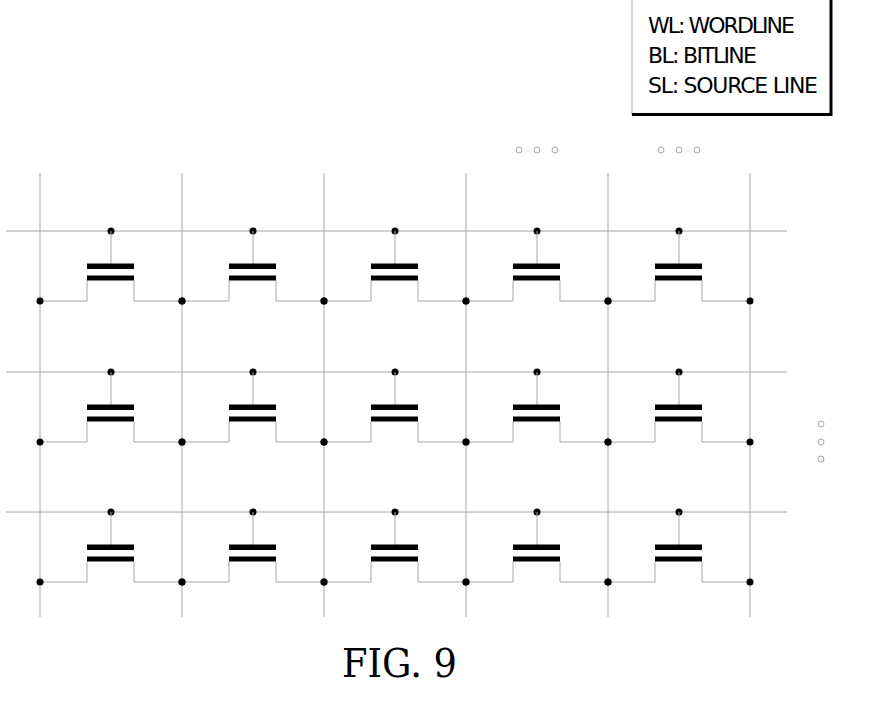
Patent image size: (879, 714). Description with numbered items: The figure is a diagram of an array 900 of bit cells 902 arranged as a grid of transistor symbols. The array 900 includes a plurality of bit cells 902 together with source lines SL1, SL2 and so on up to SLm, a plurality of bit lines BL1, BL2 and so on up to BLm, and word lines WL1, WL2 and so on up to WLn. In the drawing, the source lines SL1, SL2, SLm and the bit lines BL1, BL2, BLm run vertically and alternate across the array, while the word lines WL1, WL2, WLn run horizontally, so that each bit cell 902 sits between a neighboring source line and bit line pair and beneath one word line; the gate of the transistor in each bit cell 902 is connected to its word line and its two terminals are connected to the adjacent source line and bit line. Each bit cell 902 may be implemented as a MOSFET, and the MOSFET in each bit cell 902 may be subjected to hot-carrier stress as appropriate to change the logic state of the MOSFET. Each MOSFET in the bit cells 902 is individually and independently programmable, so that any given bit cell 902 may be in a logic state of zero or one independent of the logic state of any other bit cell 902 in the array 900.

The array 900 is at (423, 319).
The bit cell 902 is at (395, 385).
The source line SL1 is at (43, 377).
The bit line BL1 is at (185, 377).
The source line SL2 is at (326, 377).
The bit line BL2 is at (468, 377).
The source line SLm is at (611, 377).
The bit line BLm is at (752, 377).
The word line WL1 is at (423, 230).
The word line WL2 is at (423, 372).
The word line WLn is at (423, 512).